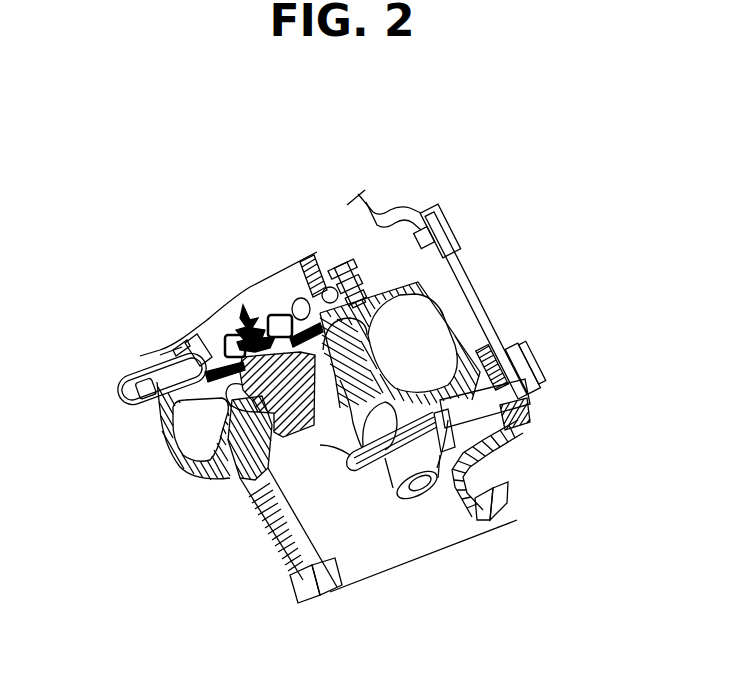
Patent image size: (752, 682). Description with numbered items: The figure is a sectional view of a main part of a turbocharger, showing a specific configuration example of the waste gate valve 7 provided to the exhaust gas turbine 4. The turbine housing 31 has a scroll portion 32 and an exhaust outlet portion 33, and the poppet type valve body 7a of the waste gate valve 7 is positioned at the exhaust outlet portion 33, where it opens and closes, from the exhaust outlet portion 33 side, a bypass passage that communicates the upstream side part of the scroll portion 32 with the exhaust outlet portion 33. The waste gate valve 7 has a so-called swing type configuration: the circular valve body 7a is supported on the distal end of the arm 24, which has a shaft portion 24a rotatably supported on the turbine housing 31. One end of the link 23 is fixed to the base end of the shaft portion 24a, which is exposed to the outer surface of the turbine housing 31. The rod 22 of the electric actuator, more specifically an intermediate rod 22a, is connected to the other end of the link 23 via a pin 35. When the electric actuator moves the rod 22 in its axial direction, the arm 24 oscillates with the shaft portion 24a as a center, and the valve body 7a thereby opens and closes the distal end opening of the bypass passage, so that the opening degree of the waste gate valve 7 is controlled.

The exhaust gas turbine 4 is at (125, 428).
The waste gate valve 7 is at (572, 416).
The valve body 7a is at (372, 470).
The rod 22 is at (403, 203).
The intermediate rod 22a is at (467, 278).
The link 23 is at (530, 356).
The arm 24 is at (418, 500).
The shaft portion 24a is at (500, 412).
The turbine housing 31 is at (233, 463).
The scroll portion 32 is at (203, 433).
The exhaust outlet portion 33 is at (347, 570).
The pin 35 is at (535, 371).